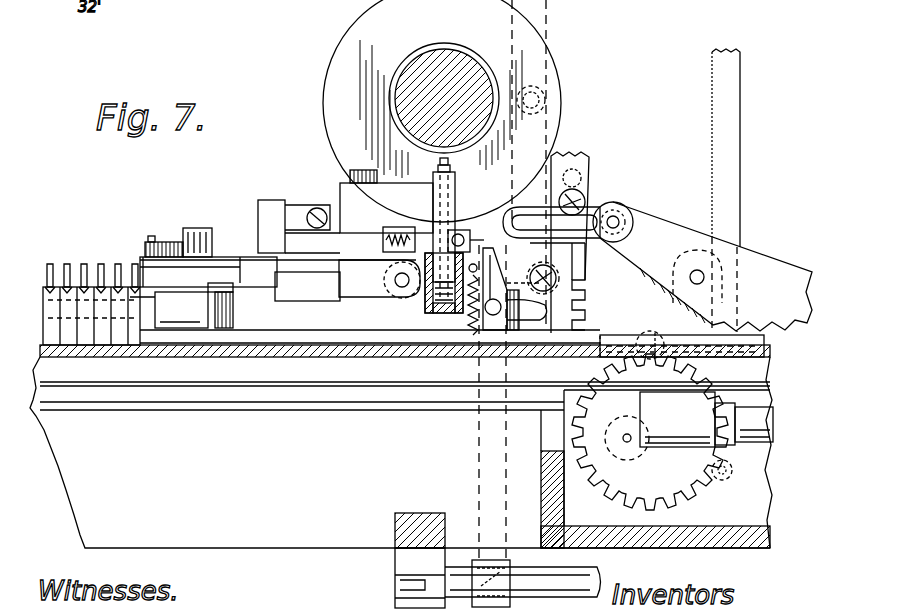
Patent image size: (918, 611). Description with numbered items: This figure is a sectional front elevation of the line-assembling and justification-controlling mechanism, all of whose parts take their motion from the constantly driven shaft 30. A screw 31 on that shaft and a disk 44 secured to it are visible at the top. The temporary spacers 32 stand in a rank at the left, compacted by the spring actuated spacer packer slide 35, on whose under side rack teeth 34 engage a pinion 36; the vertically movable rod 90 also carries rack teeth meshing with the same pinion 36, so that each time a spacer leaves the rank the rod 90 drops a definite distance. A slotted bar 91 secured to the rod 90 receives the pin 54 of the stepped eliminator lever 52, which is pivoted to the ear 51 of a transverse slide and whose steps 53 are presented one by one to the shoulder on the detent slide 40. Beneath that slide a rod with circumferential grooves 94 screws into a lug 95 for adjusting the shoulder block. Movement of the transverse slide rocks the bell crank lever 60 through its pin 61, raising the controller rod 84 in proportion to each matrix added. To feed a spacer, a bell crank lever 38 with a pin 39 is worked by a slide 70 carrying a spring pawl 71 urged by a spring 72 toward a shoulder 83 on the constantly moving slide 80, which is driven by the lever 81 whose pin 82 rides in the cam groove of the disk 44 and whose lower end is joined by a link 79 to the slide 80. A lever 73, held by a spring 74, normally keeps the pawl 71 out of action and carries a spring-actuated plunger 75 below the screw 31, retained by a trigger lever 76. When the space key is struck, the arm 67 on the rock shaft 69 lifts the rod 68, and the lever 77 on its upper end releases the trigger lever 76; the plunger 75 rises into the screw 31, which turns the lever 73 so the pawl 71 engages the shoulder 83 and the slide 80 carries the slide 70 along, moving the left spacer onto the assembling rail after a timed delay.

The constantly driven shaft 30 is at (454, 60).
The screw 31 is at (424, 68).
The temporary spacers 32 is at (112, 302).
The rack teeth 34 is at (300, 330).
The spacer packer slide 35 is at (607, 337).
The pinion 36 is at (655, 451).
The bell crank lever 38 is at (169, 310).
The pin 39 is at (232, 303).
The detent slide 40 is at (401, 446).
The disk 44 is at (442, 111).
The ear 51 is at (652, 337).
The eliminator lever 52 is at (706, 266).
The steps 53 is at (726, 279).
The pin 54 is at (616, 212).
The bell crank lever 60 is at (712, 468).
The pin 61 is at (655, 333).
The arm 67 is at (497, 563).
The vertically movable rod 68 is at (472, 487).
The space key rock shaft 69 is at (604, 580).
The slide 70 is at (150, 266).
The spring pawl 71 is at (212, 240).
The spring 72 is at (168, 242).
The lever 73 is at (312, 208).
The spring 74 is at (396, 236).
The spring-actuated plunger 75 is at (455, 178).
The trigger lever 76 is at (472, 243).
The lever 77 is at (513, 286).
The link 79 is at (418, 300).
The slide 80 is at (379, 279).
The lever 81 is at (548, 8).
The pin 82 is at (546, 98).
The shoulder 83 is at (278, 280).
The controller rod 84 is at (741, 154).
The rod 90 is at (559, 242).
The slotted bar 91 is at (590, 246).
The circumferential grooves 94 is at (773, 410).
The lug 95 is at (660, 426).